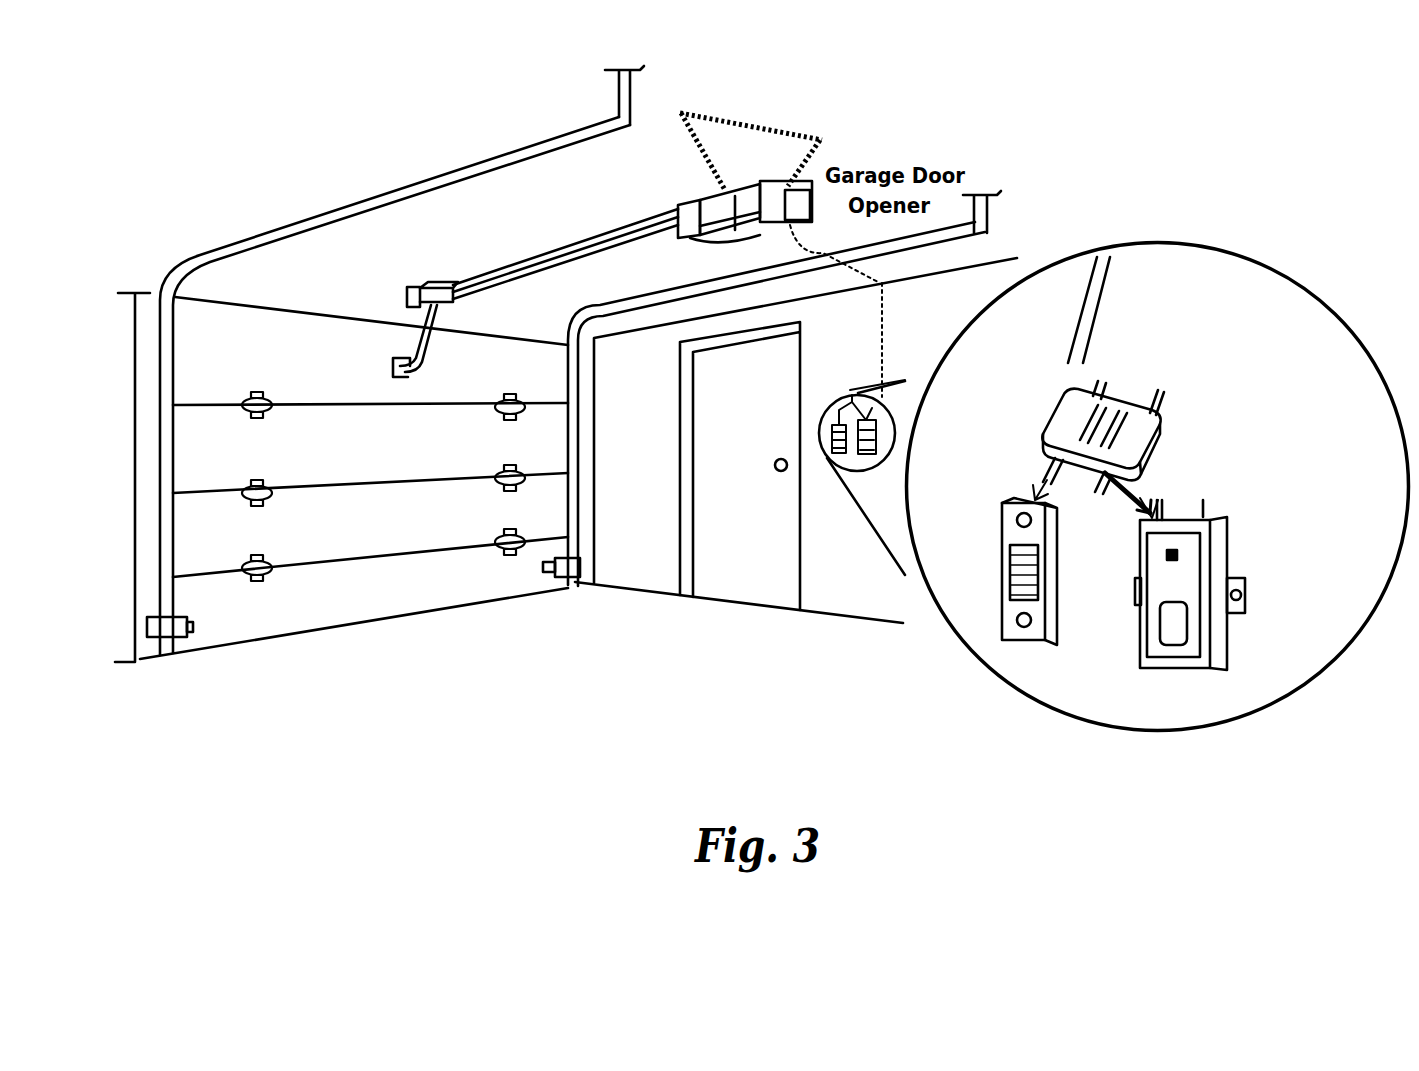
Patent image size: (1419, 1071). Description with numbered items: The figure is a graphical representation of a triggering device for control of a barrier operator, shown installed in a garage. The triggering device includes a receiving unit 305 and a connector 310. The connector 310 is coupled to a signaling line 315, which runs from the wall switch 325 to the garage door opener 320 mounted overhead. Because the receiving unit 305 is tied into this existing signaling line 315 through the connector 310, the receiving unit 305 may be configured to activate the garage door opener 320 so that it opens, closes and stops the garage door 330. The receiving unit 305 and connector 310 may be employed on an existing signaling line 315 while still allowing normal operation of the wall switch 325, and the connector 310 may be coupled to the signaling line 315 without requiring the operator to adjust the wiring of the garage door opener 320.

The receiving unit 305 is at (1193, 668).
The connector 310 is at (1137, 420).
The signaling line 315 is at (1098, 295).
The garage door opener 320 is at (700, 212).
The wall switch 325 is at (1027, 640).
The garage door 330 is at (403, 545).